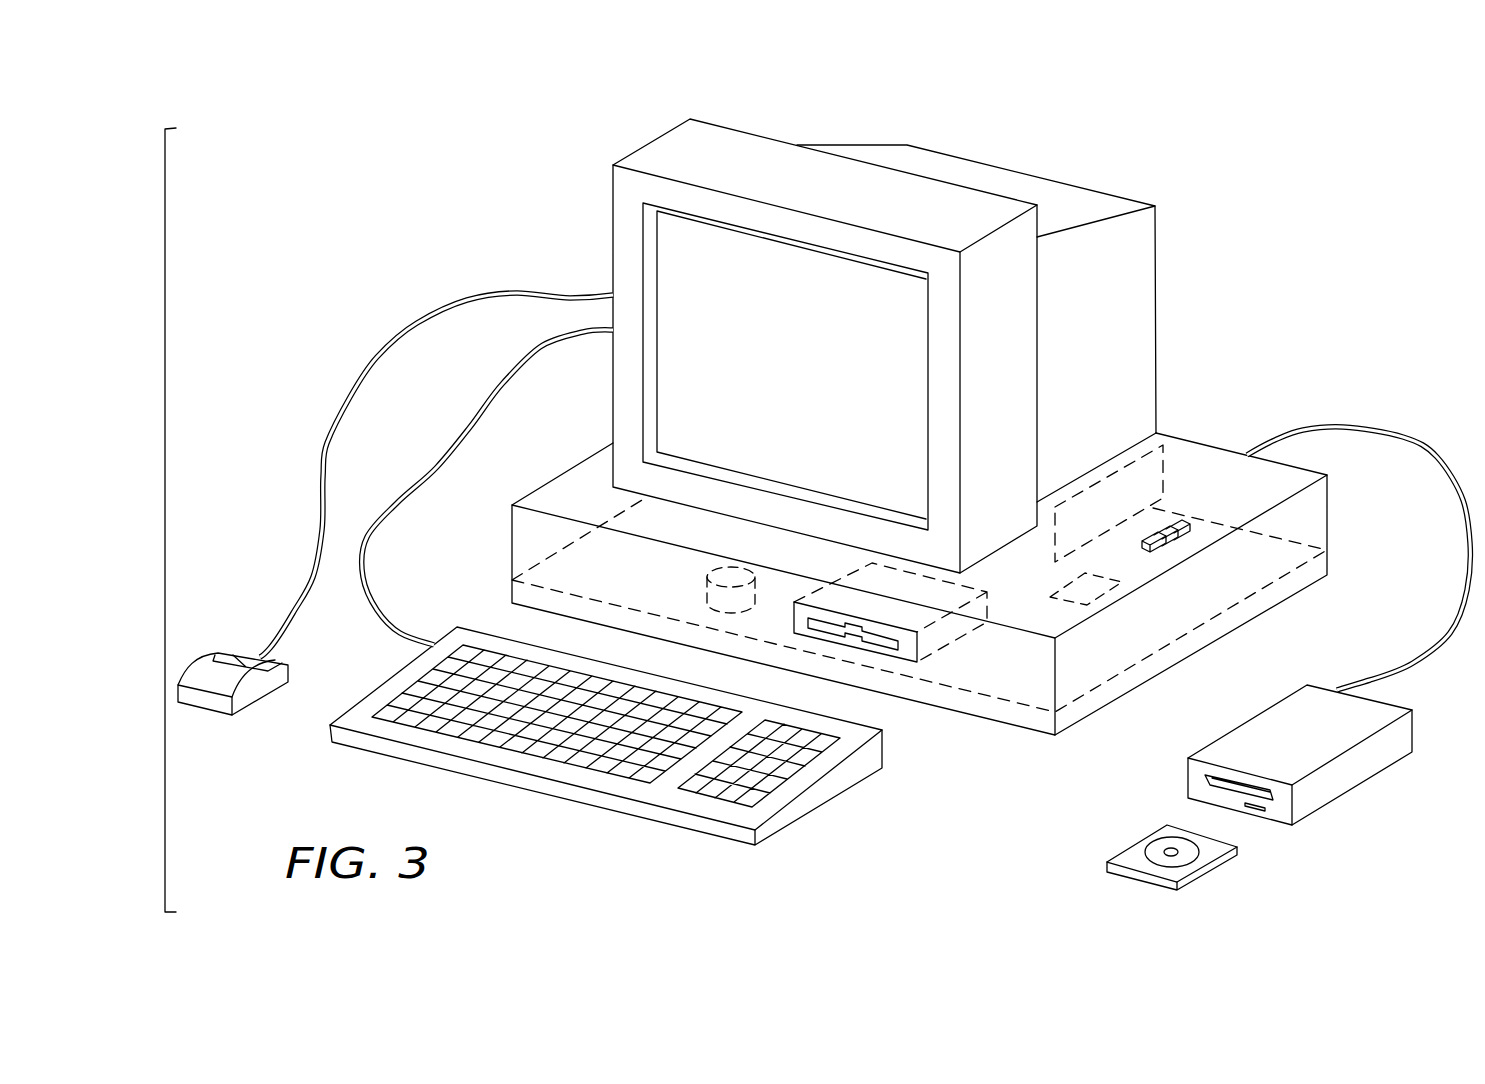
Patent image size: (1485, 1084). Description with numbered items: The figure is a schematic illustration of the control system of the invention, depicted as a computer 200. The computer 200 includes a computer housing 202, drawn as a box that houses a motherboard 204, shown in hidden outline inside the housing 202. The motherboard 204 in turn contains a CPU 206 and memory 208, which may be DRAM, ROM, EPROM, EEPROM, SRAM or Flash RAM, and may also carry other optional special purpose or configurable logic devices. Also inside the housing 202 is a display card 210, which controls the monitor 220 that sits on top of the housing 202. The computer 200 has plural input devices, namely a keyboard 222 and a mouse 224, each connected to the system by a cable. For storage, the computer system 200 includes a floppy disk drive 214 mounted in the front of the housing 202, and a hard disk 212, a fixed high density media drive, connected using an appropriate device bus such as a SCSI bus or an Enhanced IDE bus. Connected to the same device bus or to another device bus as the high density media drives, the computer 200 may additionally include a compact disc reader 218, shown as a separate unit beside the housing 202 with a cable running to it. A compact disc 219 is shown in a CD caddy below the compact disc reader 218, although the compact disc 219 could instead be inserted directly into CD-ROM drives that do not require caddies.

The computer 200 is at (165, 517).
The computer housing 202 is at (1297, 485).
The motherboard 204 is at (1330, 551).
The CPU 206 is at (1098, 597).
The memory 208 is at (1190, 517).
The display card 210 is at (1138, 460).
The hard disk 212 is at (705, 592).
The floppy disk drive 214 is at (919, 656).
The compact disc reader 218 is at (1353, 780).
The compact disc 219 is at (1190, 857).
The monitor 220 is at (1148, 224).
The keyboard 222 is at (827, 792).
The mouse 224 is at (210, 657).